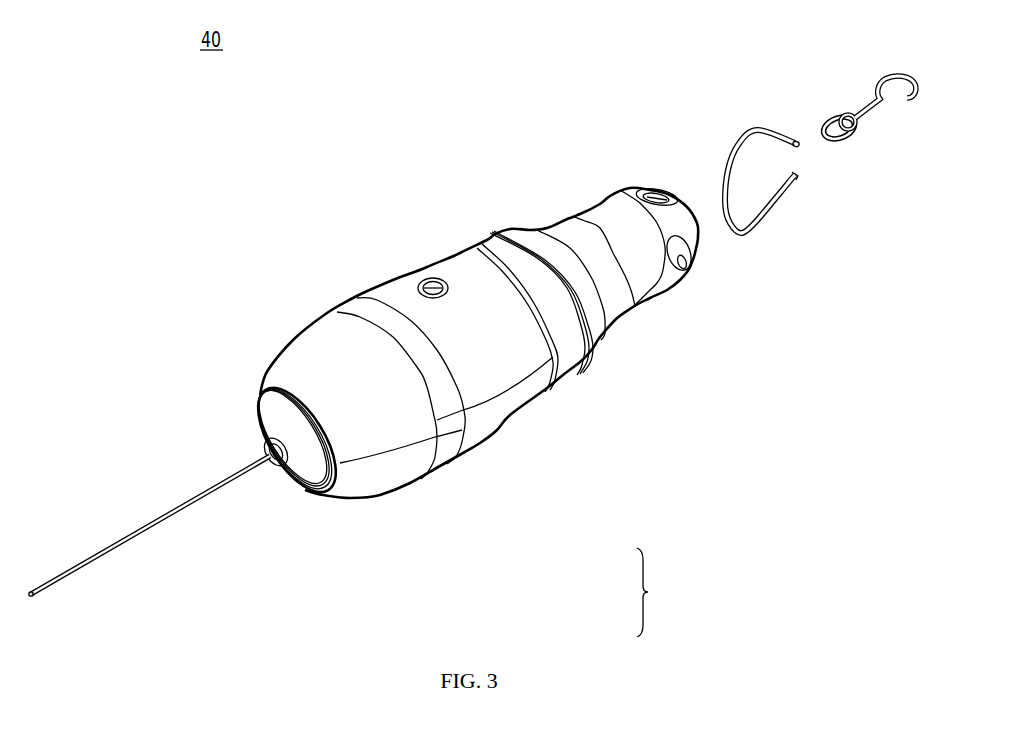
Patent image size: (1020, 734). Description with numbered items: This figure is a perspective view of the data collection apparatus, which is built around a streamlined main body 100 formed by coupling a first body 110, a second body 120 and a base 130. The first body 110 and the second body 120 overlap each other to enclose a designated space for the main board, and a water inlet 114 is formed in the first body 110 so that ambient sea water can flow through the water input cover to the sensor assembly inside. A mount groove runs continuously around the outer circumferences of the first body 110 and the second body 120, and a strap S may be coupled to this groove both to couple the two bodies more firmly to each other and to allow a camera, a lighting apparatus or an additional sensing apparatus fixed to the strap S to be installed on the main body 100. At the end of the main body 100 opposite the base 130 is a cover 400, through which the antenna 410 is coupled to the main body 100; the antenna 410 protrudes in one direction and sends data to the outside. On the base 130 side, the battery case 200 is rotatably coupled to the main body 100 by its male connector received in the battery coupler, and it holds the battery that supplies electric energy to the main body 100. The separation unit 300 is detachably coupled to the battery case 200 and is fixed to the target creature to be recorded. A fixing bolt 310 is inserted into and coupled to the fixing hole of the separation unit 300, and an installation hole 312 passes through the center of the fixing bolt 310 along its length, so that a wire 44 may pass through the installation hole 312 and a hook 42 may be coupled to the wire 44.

The hook 42 is at (886, 75).
The wire 44 is at (752, 132).
The main body 100 is at (643, 594).
The first body 110 is at (407, 428).
The water inlet 114 is at (433, 278).
The second body 120 is at (398, 478).
The base 130 is at (568, 357).
The battery case 200 is at (593, 213).
The separation unit 300 is at (630, 188).
The fixing bolt 310 is at (655, 190).
The installation hole 312 is at (663, 194).
The cover 400 is at (277, 418).
The antenna 410 is at (172, 508).
The strap S is at (357, 305).